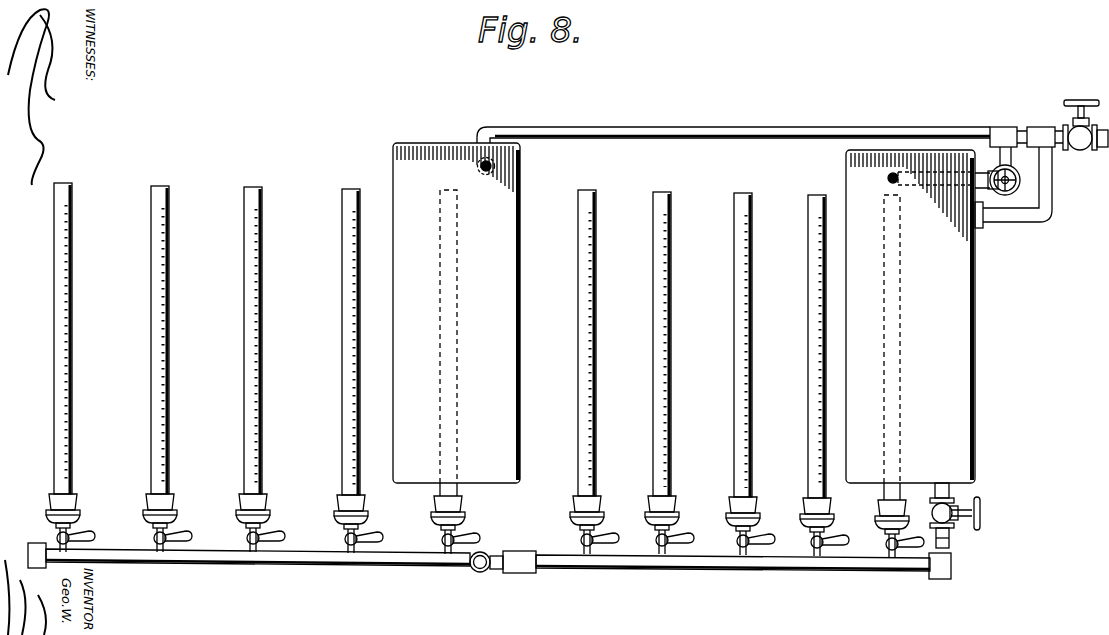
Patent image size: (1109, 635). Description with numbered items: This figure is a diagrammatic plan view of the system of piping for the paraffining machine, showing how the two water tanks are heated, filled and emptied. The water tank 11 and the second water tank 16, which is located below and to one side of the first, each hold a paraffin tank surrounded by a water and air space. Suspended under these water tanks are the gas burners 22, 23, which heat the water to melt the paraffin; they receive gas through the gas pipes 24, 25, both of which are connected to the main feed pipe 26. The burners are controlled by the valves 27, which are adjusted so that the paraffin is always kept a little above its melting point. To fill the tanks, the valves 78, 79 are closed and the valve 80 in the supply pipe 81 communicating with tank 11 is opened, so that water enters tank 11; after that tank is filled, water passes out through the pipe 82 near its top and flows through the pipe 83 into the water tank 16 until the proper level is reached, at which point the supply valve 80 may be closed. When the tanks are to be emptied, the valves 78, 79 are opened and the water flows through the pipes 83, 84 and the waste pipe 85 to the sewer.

The water tank 11 is at (958, 292).
The second water tank 16 is at (517, 283).
The gas burner 22 is at (258, 273).
The gas burner 23 is at (736, 314).
The gas pipe 24 is at (313, 561).
The gas pipe 25 is at (752, 563).
The main feed pipe 26 is at (480, 573).
The valves 27 is at (248, 538).
The valve 78 is at (1012, 197).
The valve 79 is at (1073, 118).
The supply valve 80 is at (955, 508).
The supply pipe 81 is at (952, 542).
The pipe 82 is at (1003, 223).
The pipe 83 is at (698, 129).
The pipe 84 is at (988, 172).
The waste pipe 85 is at (1099, 149).